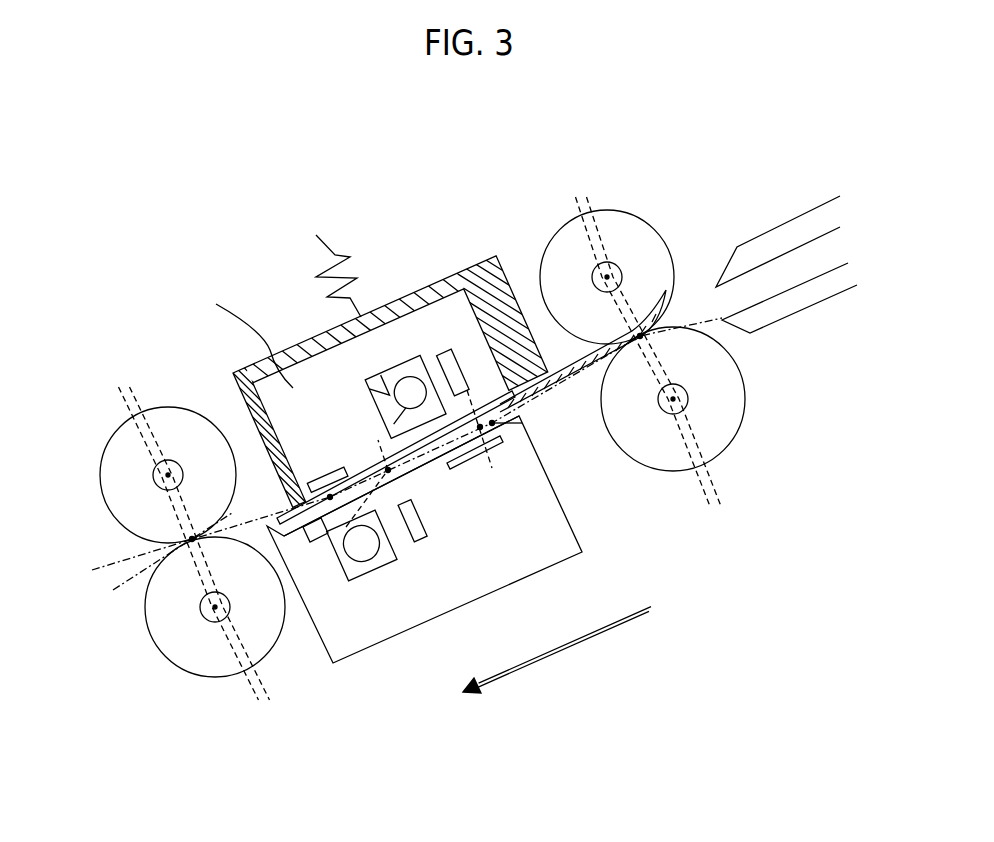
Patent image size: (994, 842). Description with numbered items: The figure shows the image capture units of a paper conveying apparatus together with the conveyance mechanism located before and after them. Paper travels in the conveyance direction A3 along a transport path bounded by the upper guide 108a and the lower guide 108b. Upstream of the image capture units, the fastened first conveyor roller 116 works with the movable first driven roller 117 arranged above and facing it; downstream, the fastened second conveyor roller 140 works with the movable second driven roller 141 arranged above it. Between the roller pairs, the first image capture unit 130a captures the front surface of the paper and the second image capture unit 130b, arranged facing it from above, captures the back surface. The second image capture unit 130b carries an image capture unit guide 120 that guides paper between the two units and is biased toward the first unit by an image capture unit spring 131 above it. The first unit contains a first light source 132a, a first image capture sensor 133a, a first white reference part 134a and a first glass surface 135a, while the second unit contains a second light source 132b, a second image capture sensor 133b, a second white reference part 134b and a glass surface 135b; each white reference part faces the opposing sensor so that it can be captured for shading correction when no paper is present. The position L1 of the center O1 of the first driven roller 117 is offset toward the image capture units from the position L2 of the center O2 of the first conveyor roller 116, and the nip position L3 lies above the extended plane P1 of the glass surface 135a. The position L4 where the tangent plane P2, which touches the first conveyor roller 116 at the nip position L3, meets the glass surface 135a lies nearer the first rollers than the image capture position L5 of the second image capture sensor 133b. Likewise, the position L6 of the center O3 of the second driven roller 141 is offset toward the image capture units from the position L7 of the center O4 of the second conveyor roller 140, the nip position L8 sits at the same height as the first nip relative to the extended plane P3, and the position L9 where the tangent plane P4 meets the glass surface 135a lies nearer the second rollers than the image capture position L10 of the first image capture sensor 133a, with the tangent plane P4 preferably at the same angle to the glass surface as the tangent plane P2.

The upper guide 108a is at (825, 218).
The lower guide 108b is at (825, 290).
The first conveyor roller 116 is at (714, 434).
The first driven roller 117 is at (637, 227).
The image capture unit guide 120 is at (458, 282).
The first image capture unit 130a is at (345, 643).
The second image capture unit 130b is at (228, 337).
The image capture unit spring 131 is at (335, 255).
The first light source 132a is at (425, 548).
The second light source 132b is at (446, 352).
The first image capture sensor 133a is at (375, 556).
The second image capture sensor 133b is at (408, 393).
The first white reference part 134a is at (547, 476).
The second white reference part 134b is at (352, 460).
The first glass surface 135a is at (300, 522).
The glass surface 135b is at (343, 477).
The second conveyor roller 140 is at (197, 652).
The second driven roller 141 is at (122, 495).
The position of the center O1 L1 is at (576, 203).
The position of the center O2 L2 is at (587, 198).
The nip position L3 is at (642, 337).
The position where tangent plane P2 and glass surface 135a contact L4 is at (517, 463).
The image capture position L5 is at (483, 452).
The position of the center O3 L6 is at (135, 397).
The position of the center O4 L7 is at (124, 398).
The nip position L8 is at (191, 539).
The position where tangent plane P4 and glass surface 135a contact L9 is at (330, 490).
The image capture position L10 is at (390, 472).
The center O1 is at (606, 277).
The center O2 is at (675, 399).
The center O3 is at (168, 476).
The center O4 is at (214, 607).
The extended plane P1 is at (588, 381).
The tangent plane P2 is at (575, 379).
The extended plane P3 is at (155, 563).
The tangent plane P4 is at (196, 540).
The conveyance direction A3 is at (557, 650).